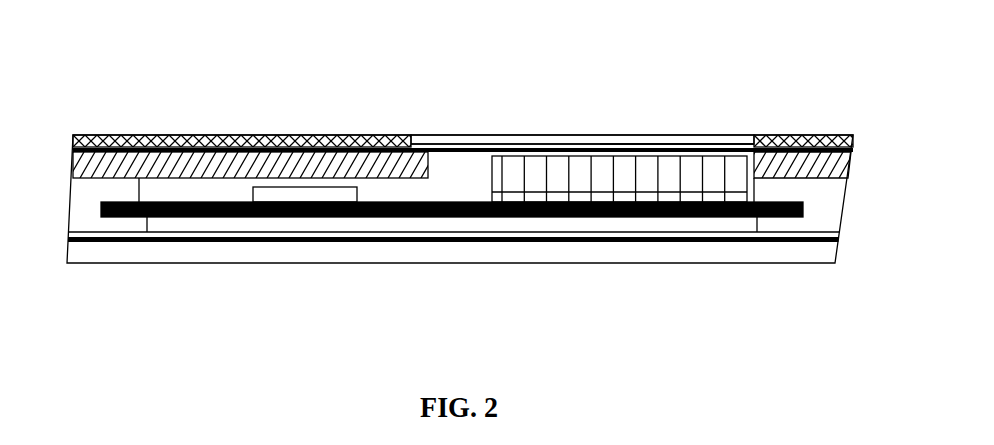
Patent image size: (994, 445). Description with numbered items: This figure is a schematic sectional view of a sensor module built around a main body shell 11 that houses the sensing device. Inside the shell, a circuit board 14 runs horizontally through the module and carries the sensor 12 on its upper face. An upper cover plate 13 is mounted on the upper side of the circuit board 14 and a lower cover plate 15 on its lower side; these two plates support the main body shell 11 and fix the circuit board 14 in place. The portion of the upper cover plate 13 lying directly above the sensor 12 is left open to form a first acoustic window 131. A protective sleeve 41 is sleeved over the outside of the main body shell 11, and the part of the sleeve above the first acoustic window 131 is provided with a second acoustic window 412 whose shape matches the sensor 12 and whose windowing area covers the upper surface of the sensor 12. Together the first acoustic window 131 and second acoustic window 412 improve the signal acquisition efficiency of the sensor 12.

The main body shell 11 is at (712, 143).
The sensor 12 is at (537, 182).
The upper cover plate 13 is at (118, 163).
The first acoustic window 131 is at (448, 163).
The circuit board 14 is at (377, 215).
The lower cover plate 15 is at (262, 227).
The protective sleeve 41 is at (258, 145).
The second acoustic window 412 is at (645, 143).